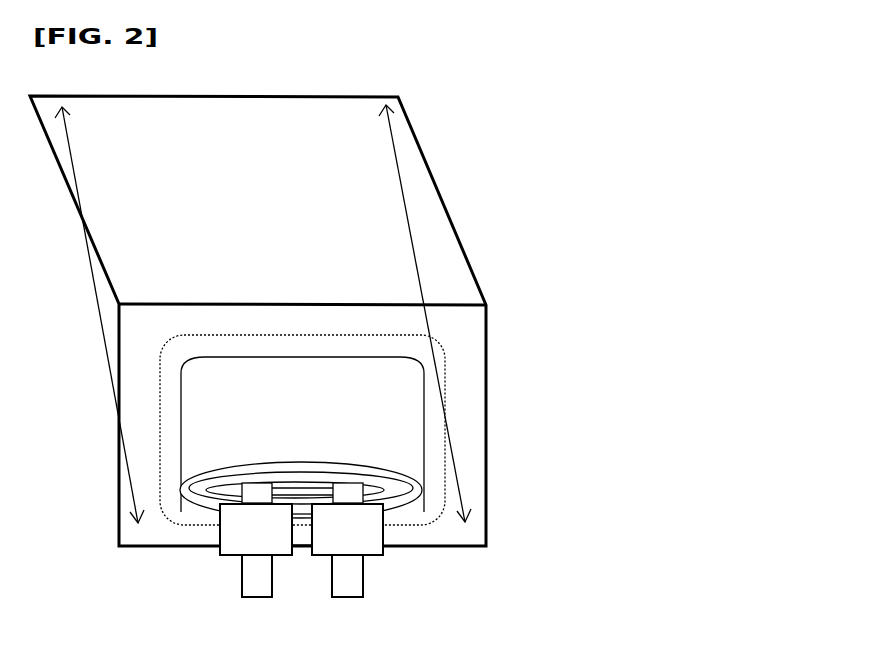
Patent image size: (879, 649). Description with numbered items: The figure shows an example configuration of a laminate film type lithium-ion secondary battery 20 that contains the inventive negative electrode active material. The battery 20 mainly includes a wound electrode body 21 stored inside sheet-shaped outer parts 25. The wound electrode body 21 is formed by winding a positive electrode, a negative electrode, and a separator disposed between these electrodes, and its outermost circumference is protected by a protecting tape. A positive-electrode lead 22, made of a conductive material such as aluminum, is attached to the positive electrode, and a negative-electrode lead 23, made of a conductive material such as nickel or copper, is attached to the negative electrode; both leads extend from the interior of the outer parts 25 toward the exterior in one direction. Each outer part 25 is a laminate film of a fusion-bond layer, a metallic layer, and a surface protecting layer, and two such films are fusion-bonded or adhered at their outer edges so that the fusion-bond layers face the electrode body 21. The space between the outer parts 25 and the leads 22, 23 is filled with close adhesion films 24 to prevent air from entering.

The laminate film type lithium-ion secondary battery 20 is at (442, 109).
The wound electrode body 21 is at (383, 413).
The positive-electrode lead 22 is at (252, 582).
The negative-electrode lead 23 is at (347, 583).
The close adhesion films 24 is at (368, 537).
The outer parts 25 is at (322, 207).